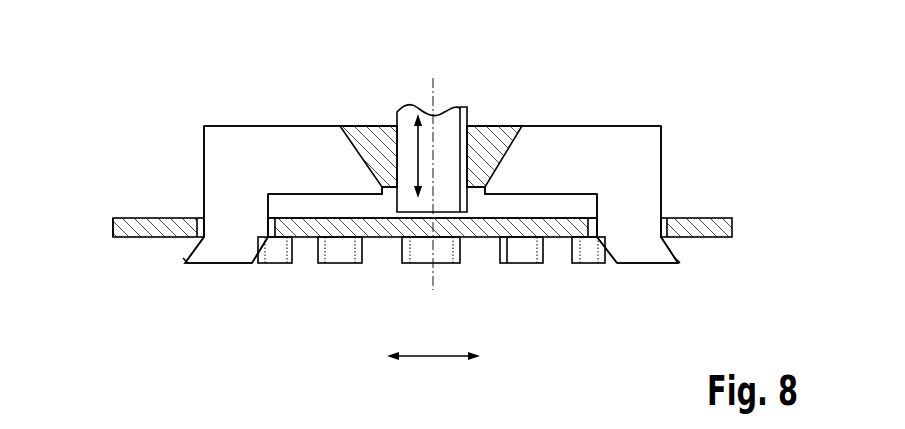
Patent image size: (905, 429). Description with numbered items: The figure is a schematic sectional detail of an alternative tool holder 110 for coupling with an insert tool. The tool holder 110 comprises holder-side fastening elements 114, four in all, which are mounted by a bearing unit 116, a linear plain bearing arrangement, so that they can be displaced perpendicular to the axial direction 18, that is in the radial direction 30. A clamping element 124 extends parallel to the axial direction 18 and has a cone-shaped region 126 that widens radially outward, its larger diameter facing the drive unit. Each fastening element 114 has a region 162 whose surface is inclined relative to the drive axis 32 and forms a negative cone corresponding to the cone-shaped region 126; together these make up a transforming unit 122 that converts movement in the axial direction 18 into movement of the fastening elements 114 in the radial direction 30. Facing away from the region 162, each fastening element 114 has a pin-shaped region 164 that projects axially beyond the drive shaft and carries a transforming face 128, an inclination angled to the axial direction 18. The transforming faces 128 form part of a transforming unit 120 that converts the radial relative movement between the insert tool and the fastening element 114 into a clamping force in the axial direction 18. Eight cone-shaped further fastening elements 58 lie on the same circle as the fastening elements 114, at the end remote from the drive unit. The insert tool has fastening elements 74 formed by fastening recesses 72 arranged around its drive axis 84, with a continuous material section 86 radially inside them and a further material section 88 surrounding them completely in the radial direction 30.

The axial direction 18 is at (416, 158).
The radial direction 30 is at (433, 360).
The drive axis 32 is at (432, 280).
The further fastening elements 58 is at (580, 253).
The fastening recesses 72 is at (664, 219).
The fastening elements 74 is at (155, 227).
The drive axis 84 is at (431, 250).
The material section 86 is at (390, 228).
The further material section 88 is at (713, 219).
The tool holder 110 is at (323, 300).
The fastening element 114 is at (228, 160).
The bearing unit 116 is at (243, 104).
The transforming unit 120 is at (178, 245).
The transforming unit 122 is at (540, 143).
The clamping element 124 is at (410, 113).
The cone-shaped region 126 is at (497, 137).
The transforming face 128 is at (182, 262).
The region 162 is at (330, 140).
The pin-shaped region 164 is at (232, 252).